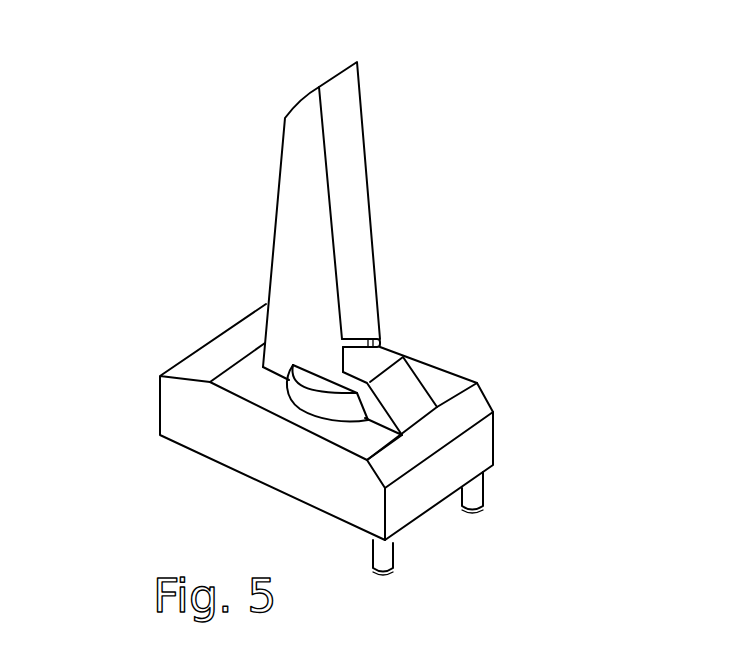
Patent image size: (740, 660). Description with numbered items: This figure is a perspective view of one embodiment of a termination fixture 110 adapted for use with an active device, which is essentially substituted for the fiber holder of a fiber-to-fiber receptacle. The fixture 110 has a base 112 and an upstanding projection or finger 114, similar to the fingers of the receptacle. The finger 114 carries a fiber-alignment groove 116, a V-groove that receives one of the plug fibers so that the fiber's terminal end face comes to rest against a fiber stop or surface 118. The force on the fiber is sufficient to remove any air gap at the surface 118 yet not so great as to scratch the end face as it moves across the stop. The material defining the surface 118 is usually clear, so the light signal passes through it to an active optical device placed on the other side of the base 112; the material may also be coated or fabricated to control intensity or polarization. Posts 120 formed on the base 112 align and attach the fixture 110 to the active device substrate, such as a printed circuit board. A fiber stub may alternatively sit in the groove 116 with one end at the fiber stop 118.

The termination fixture 110 is at (162, 283).
The base 112 is at (263, 453).
The finger 114 is at (300, 217).
The fiber-alignment groove 116 is at (347, 270).
The fiber stop 118 is at (355, 353).
The posts 120 is at (483, 512).